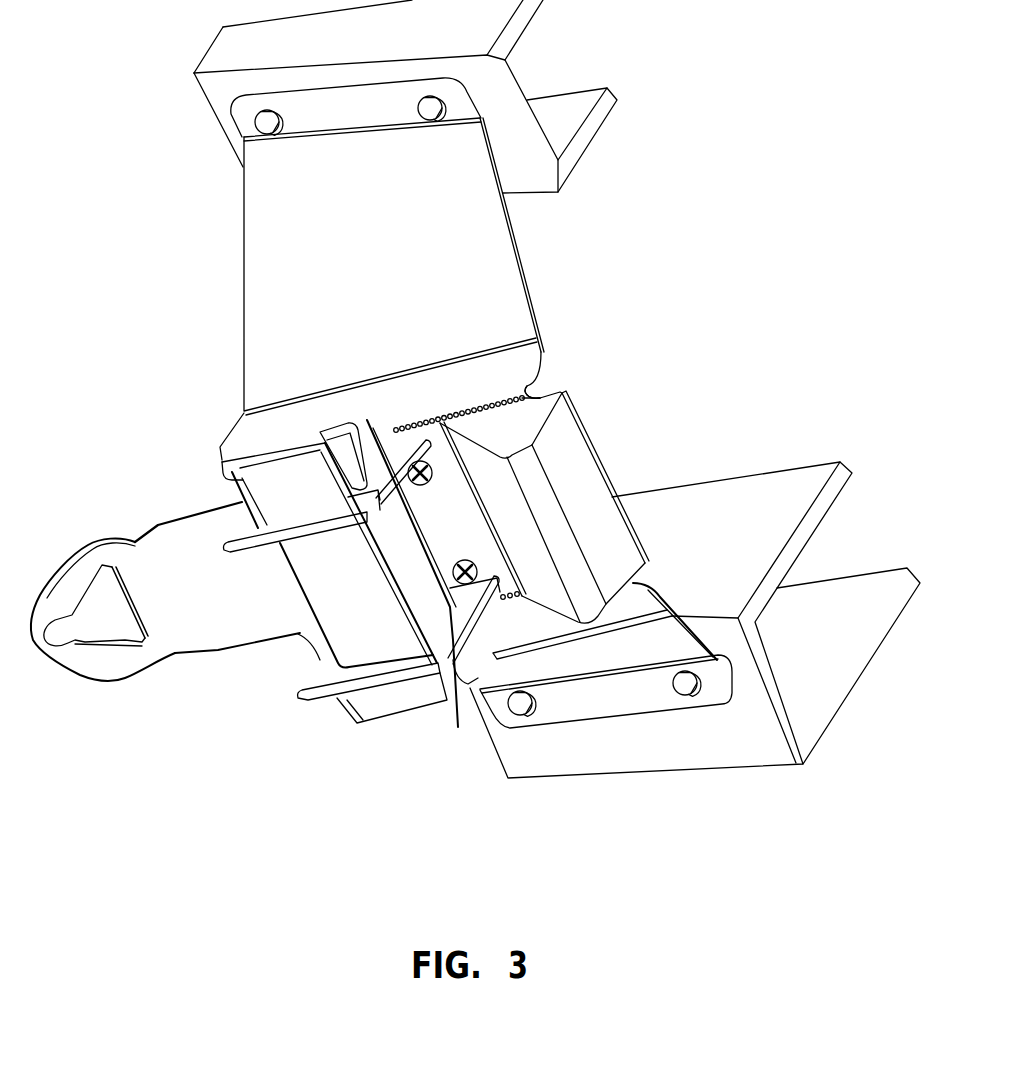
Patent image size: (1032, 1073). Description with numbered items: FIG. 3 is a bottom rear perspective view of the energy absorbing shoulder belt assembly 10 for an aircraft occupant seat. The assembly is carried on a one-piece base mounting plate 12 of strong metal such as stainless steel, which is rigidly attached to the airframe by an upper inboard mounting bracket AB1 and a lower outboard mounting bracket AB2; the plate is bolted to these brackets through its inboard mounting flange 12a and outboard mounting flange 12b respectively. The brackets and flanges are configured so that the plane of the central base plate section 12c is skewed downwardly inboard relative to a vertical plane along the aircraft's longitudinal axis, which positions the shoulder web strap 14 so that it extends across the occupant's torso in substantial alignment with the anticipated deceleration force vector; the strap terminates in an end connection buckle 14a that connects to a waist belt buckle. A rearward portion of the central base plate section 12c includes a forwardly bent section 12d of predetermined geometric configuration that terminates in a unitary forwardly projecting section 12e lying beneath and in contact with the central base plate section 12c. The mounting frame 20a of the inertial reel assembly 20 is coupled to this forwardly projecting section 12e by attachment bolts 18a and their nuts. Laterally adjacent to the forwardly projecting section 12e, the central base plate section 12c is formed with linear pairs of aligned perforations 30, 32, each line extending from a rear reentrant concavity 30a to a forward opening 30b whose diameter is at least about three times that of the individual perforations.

The energy absorbing shoulder belt assembly 10 is at (687, 306).
The base mounting plate 12 is at (246, 282).
The inboard mounting flange 12a is at (347, 250).
The outboard mounting flange 12b is at (619, 658).
The central base plate section 12c is at (422, 387).
The forwardly bent section 12d is at (546, 507).
The forwardly projecting section 12e is at (482, 541).
The shoulder web strap 14 is at (206, 594).
The end connection buckle 14a is at (122, 668).
The attachment bolt 18a is at (347, 392).
The inertial reel assembly 20 is at (351, 589).
The mounting frame 20a is at (441, 540).
The perforations 30 is at (472, 402).
The rear reentrant concavity 30a is at (530, 384).
The forward opening 30b is at (634, 583).
The perforations 32 is at (513, 602).
The upper inboard mounting bracket AB1 is at (583, 137).
The lower outboard mounting bracket AB2 is at (820, 723).